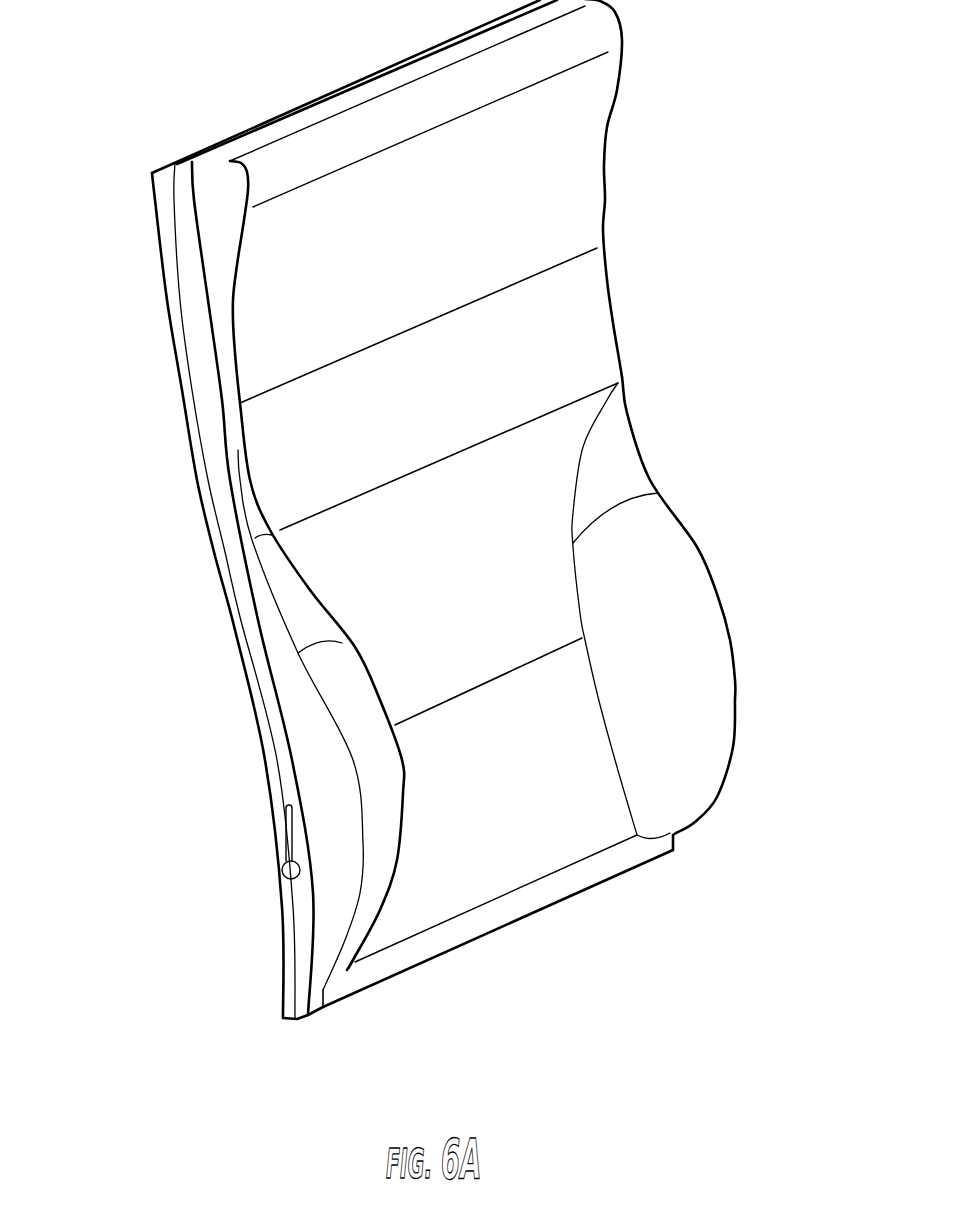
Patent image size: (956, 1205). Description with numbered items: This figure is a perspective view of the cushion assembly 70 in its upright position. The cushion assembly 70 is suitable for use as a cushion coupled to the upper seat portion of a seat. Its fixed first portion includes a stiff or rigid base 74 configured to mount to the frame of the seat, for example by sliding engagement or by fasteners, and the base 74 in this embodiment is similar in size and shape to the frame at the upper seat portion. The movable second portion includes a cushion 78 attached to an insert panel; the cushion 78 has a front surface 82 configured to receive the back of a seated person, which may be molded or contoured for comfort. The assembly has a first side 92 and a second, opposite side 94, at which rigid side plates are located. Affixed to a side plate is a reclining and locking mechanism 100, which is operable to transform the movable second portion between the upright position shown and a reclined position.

The cushion assembly 70 is at (92, 129).
The base 74 is at (185, 371).
The cushion 78 is at (583, 387).
The front surface 82 is at (470, 517).
The first side 92 is at (213, 552).
The second side 94 is at (612, 323).
The reclining and locking mechanism 100 is at (268, 857).